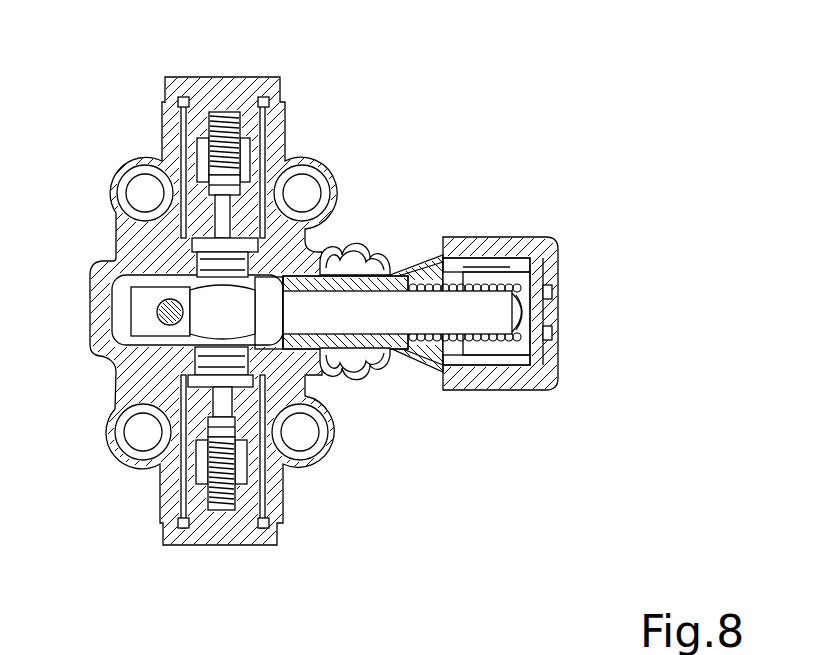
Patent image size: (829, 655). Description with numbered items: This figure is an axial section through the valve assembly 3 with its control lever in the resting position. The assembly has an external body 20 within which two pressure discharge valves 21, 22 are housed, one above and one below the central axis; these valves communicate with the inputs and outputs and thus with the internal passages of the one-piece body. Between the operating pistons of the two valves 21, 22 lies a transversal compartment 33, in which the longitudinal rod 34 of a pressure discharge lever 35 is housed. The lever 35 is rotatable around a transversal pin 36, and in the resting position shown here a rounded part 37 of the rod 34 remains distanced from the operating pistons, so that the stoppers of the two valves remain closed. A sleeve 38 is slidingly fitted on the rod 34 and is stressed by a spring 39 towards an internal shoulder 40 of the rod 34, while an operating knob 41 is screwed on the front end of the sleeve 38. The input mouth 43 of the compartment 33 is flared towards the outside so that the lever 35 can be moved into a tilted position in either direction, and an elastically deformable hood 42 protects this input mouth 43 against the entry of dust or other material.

The valve assembly 3 is at (335, 163).
The external body 20 is at (138, 230).
The pressure discharge valve 21 is at (272, 77).
The pressure discharge valve 22 is at (210, 557).
The transversal compartment 33 is at (115, 287).
The longitudinal rod 34 is at (369, 318).
The pressure discharge lever 35 is at (428, 387).
The transversal pin 36 is at (167, 312).
The rounded part 37 is at (205, 327).
The sleeve 38 is at (403, 272).
The spring 39 is at (517, 290).
The internal shoulder 40 is at (432, 272).
The operating knob 41 is at (520, 380).
The elastically deformable hood 42 is at (352, 255).
The input mouth 43 is at (342, 252).